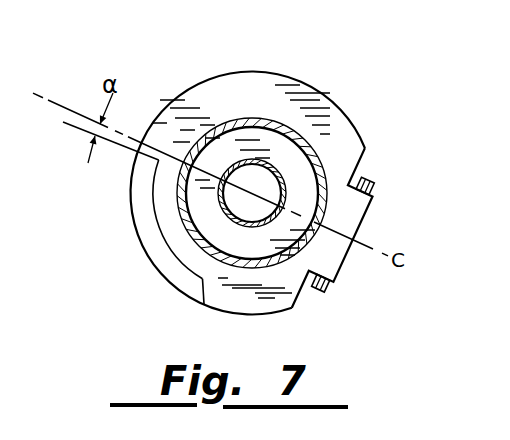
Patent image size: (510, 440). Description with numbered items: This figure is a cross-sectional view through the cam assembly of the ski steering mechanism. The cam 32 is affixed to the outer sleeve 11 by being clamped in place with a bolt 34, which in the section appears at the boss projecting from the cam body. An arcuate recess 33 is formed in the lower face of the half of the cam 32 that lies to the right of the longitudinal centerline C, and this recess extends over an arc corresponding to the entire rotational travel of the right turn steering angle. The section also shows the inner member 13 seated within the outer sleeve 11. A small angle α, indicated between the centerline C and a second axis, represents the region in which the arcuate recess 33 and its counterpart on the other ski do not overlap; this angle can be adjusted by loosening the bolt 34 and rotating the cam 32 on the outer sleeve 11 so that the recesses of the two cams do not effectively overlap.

The outer sleeve 11 is at (177, 191).
The pipe 13 is at (267, 162).
The cam 32 is at (238, 66).
The arcuate recess 33 is at (162, 261).
The bolt 34 is at (373, 180).